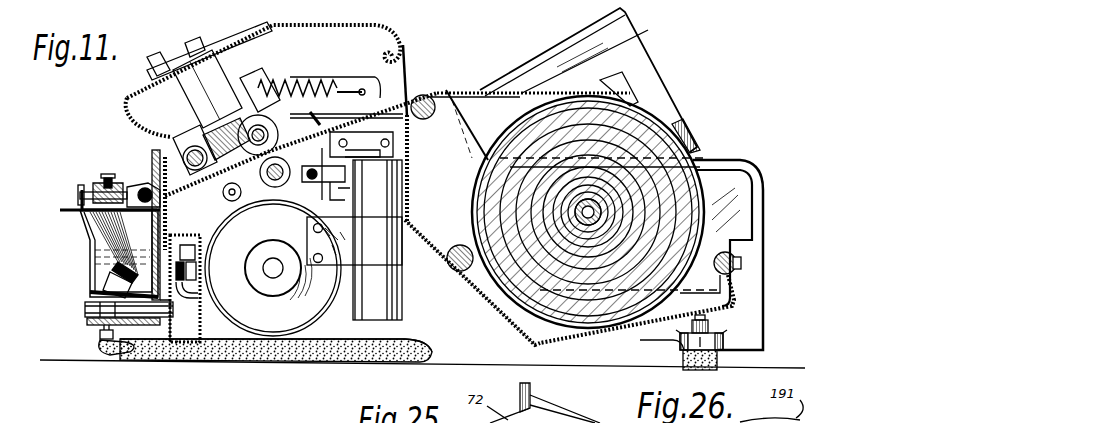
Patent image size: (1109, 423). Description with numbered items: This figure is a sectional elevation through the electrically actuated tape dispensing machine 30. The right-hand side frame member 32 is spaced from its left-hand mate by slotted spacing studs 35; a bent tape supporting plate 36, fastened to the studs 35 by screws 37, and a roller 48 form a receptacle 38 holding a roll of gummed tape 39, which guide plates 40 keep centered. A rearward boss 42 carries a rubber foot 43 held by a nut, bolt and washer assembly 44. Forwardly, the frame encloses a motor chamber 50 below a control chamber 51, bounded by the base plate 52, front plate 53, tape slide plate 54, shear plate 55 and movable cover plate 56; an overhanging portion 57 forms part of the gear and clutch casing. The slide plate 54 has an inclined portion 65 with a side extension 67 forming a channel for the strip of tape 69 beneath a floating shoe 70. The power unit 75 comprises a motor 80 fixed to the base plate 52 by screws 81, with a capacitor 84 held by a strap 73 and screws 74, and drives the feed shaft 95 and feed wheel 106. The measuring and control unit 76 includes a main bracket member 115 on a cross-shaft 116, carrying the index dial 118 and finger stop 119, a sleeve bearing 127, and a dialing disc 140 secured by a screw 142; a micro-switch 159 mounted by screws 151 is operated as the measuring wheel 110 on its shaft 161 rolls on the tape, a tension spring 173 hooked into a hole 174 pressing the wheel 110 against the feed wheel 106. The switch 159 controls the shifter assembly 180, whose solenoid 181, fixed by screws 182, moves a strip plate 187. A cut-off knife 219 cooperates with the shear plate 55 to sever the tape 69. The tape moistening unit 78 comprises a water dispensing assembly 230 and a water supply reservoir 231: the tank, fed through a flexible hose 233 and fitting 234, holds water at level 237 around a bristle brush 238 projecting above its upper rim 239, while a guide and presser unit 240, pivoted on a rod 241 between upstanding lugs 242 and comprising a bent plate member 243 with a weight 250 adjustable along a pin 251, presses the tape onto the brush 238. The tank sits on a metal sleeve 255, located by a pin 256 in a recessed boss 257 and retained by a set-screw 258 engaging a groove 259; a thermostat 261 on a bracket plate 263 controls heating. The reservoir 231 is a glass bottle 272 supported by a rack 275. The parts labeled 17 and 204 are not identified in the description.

The arrow indicator 17 is at (327, 154).
The tape dispensing machine 30 is at (456, 56).
The right-hand side frame member 32 is at (446, 335).
The spacing studs 35 is at (740, 284).
The tape supporting plate 36 is at (505, 320).
The screws 37 is at (747, 265).
The receptacle 38 is at (730, 178).
The roll of gummed tape 39 is at (696, 152).
The guide plates 40 is at (752, 195).
The boss 42 is at (725, 342).
The foot 43 is at (683, 357).
The nut, bolt, and washer assembly 44 is at (712, 326).
The roller 48 is at (448, 264).
The motor chamber 50 is at (195, 347).
The control chamber 51 is at (405, 85).
The base plate 52 is at (294, 355).
The front plate 53 is at (165, 340).
The tape slide plate 54 is at (410, 160).
The shear plate 55 is at (145, 185).
The movable cover plate 56 is at (378, 24).
The overhanging outwardly extending portion 57 is at (385, 60).
The inclined portion 65 is at (228, 195).
The side extension 67 is at (332, 118).
The strip of tape 69 is at (360, 88).
The floating shoe 70 is at (310, 120).
The strap 73 is at (382, 232).
The screws 74 is at (320, 258).
The power unit 75 is at (205, 341).
The measuring and control unit 76 is at (277, 72).
The tape moistening unit 78 is at (85, 296).
The motor 80 is at (265, 345).
The screws 81 is at (230, 345).
The starting and running capacitor 84 is at (375, 320).
The feed shaft 95 is at (270, 172).
The feed wheel 106 is at (288, 180).
The measuring wheel 110 is at (205, 100).
The main bracket member 115 is at (190, 100).
The cross-shaft 116 is at (190, 145).
The index dial 118 is at (140, 88).
The finger stop 119 is at (158, 62).
The sleeve bearing 127 is at (222, 58).
The dialing disc 140 is at (150, 74).
The screw 142 is at (192, 42).
The screws 151 is at (262, 76).
The micro-switch 159 is at (280, 72).
The shaft 161 is at (258, 118).
The tension spring 173 is at (322, 115).
The hole 174 is at (368, 102).
The shifter assembly 180 is at (288, 208).
The solenoid 181 is at (352, 180).
The screws 182 is at (385, 140).
The strip plate 187 is at (352, 210).
The column 204 is at (144, 225).
The cut-off knife 219 is at (210, 182).
The water dispensing assembly 230 is at (83, 285).
The water supply reservoir 231 is at (672, 97).
The flexible hose 233 is at (273, 355).
The fitting 234 is at (108, 370).
The water level 237 is at (100, 256).
The bristle brush 238 is at (110, 244).
The upper rim 239 is at (72, 220).
The guide and presser unit 240 is at (86, 182).
The rod 241 is at (135, 182).
The upstanding lugs 242 is at (150, 172).
The plate member 243 is at (80, 195).
The weight 250 is at (100, 175).
The pin 251 is at (85, 185).
The metal sleeve 255 is at (90, 318).
The locating pin 256 is at (195, 222).
The recessed boss 257 is at (200, 270).
The set-screw 258 is at (105, 350).
The groove 259 is at (100, 335).
The thermostat 261 is at (200, 250).
The bracket plate 263 is at (200, 205).
The glass bottle 272 is at (623, 43).
The rack 275 is at (628, 82).